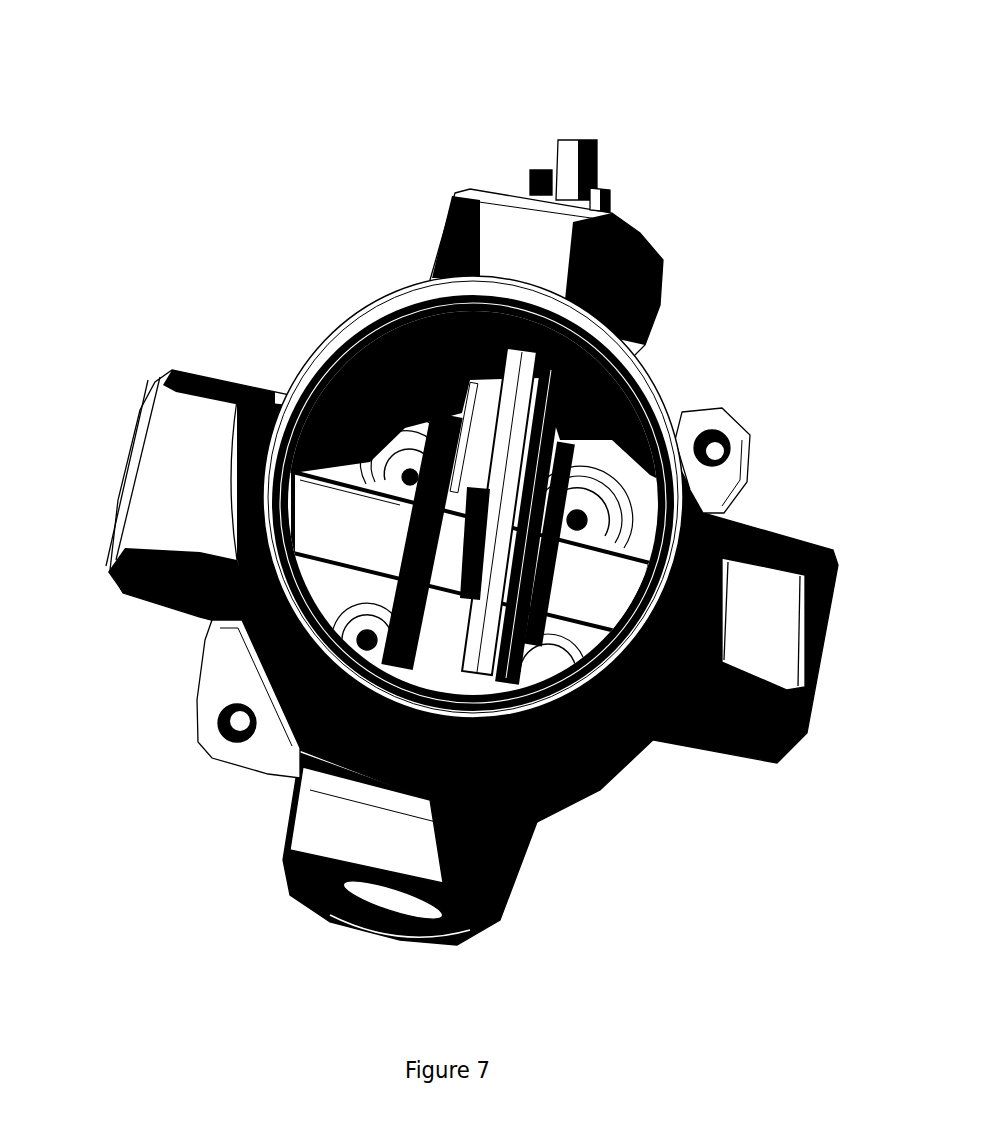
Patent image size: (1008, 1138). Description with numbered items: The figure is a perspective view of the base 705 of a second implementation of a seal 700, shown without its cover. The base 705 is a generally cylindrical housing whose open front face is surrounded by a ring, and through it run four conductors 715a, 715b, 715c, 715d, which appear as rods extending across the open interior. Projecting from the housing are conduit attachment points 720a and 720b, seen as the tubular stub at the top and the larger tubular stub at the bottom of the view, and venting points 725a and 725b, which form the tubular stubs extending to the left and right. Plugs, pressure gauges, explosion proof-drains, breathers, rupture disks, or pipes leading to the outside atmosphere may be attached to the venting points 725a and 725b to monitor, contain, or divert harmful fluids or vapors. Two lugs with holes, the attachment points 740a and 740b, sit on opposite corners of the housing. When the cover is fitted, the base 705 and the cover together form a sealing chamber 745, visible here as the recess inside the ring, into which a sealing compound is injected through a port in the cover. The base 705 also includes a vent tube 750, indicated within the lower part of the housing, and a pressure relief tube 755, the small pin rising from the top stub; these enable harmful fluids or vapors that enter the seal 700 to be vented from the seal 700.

The seal 700 is at (468, 26).
The base 705 is at (598, 792).
The conductor 715a is at (462, 418).
The conductor 715b is at (350, 327).
The conductor 715c is at (543, 403).
The conductor 715d is at (565, 440).
The conduit attachment point 720a is at (499, 195).
The conduit attachment point 720b is at (375, 935).
The venting point 725a is at (127, 472).
The venting point 725b is at (818, 660).
The attachment point 740a is at (718, 450).
The attachment point 740b is at (237, 725).
The sealing chamber 745 is at (632, 508).
The vent tube 750 is at (597, 600).
The pressure relief tube 755 is at (585, 140).